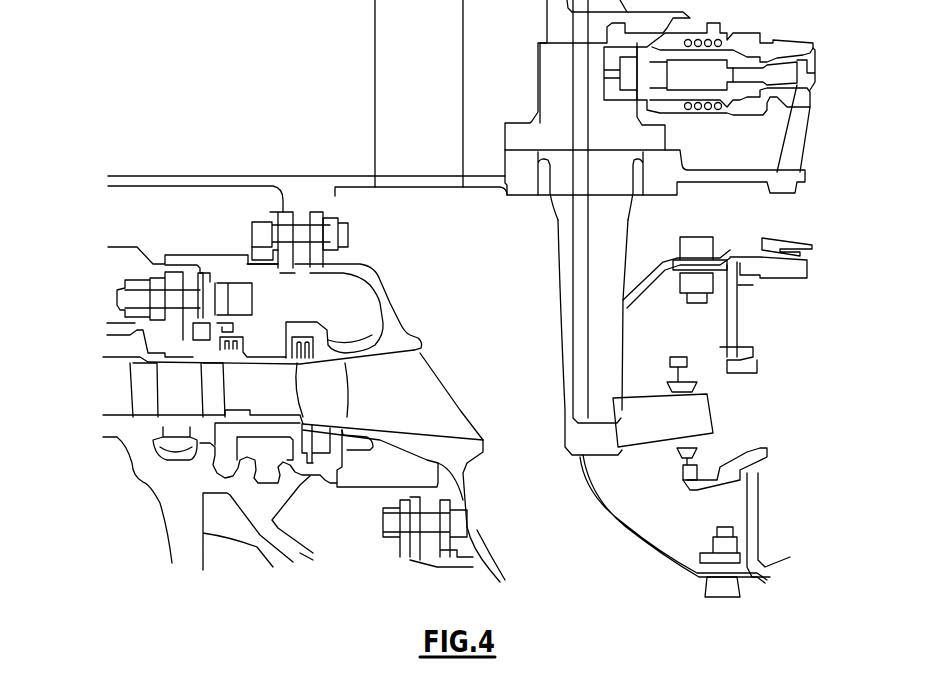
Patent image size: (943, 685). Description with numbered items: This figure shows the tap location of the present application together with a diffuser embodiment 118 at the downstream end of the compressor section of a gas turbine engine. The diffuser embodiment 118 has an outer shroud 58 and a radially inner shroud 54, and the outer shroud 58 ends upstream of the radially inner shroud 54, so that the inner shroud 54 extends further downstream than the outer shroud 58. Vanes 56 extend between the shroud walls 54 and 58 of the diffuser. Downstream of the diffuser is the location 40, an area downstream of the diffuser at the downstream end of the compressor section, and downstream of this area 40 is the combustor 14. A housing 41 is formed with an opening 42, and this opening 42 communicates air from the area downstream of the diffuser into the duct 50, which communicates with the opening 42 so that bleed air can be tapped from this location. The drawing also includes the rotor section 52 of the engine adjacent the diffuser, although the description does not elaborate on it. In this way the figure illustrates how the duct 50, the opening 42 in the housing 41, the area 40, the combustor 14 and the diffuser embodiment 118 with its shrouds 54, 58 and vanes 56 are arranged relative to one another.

The combustor 14 is at (760, 412).
The location downstream of a diffuser 40 is at (512, 308).
The housing 41 is at (297, 182).
The opening 42 is at (400, 187).
The duct 50 is at (373, 60).
The rotor 52 is at (404, 408).
The radially inner shroud 54 is at (460, 452).
The vanes 56 is at (452, 390).
The outer shroud 58 is at (416, 343).
The diffuser embodiment 118 is at (87, 318).